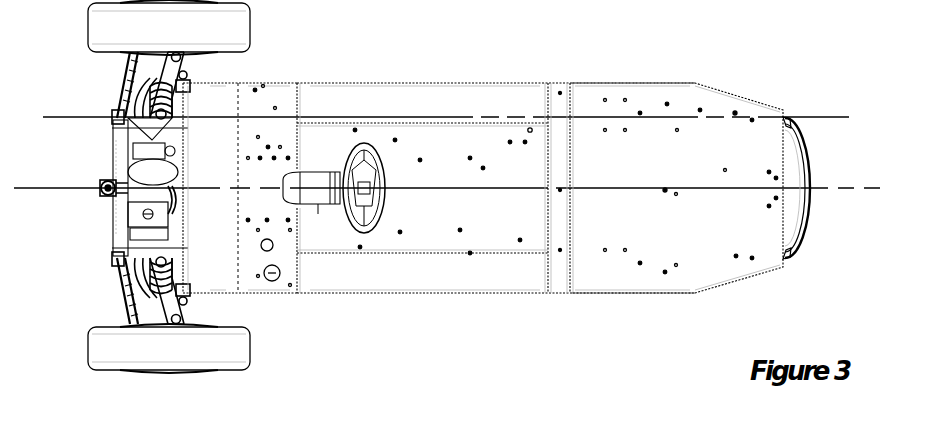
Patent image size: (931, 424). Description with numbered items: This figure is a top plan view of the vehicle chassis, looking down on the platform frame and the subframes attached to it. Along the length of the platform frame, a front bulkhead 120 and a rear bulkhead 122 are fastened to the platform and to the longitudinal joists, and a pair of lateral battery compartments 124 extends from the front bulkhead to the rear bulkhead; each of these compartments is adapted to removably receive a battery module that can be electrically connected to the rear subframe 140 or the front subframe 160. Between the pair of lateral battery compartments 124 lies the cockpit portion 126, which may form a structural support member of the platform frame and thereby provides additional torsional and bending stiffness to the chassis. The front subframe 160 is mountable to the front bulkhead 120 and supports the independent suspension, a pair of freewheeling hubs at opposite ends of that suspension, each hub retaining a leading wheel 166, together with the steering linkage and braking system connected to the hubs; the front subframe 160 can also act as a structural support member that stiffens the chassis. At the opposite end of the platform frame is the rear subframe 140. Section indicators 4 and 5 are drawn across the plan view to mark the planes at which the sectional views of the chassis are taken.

The section line 4- 4 is at (14, 188).
The section line 5- 5 is at (43, 117).
The front bulkhead 120 is at (265, 322).
The rear bulkhead 122 is at (647, 323).
The lateral battery compartments 124 is at (448, 82).
The cockpit portion 126 is at (466, 181).
The rear subframe 140 is at (797, 267).
The front subframe 160 is at (97, 243).
The leading wheel 166 is at (263, 30).